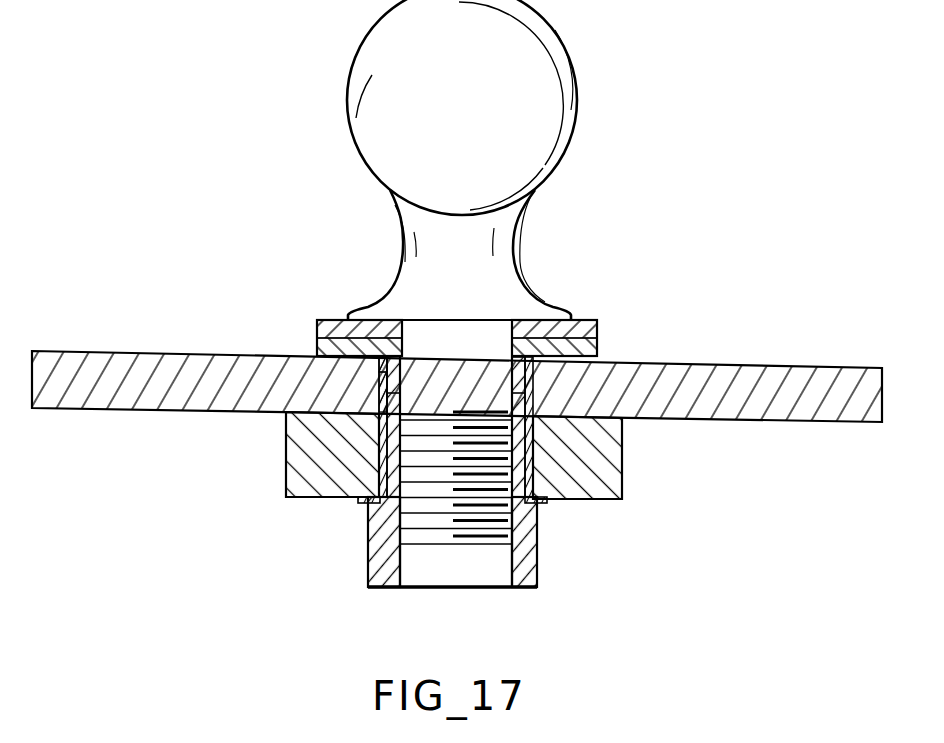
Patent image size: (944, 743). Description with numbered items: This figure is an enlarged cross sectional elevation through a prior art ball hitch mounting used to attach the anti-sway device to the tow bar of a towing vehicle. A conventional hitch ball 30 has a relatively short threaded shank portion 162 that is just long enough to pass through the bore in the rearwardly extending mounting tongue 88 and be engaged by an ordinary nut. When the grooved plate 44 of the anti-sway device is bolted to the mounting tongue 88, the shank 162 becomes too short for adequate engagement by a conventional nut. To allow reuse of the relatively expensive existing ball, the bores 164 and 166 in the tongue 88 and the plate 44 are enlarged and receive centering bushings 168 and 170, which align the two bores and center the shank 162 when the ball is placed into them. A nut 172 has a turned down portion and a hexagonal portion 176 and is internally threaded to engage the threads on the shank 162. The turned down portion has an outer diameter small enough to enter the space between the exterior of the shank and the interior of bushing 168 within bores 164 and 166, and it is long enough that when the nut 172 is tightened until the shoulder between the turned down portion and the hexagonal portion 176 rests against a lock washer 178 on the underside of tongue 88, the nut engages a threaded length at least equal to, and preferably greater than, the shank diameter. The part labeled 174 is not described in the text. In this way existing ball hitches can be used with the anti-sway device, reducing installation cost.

The hitch ball 30 is at (548, 42).
The grooved plate 44 is at (108, 367).
The mounting tongue 88 is at (293, 470).
The threaded shank portion 162 is at (413, 521).
The bore 164 is at (380, 446).
The bore 166 is at (385, 368).
The centering bushing 168 is at (400, 397).
The centering bushing 170 is at (520, 378).
The nut 172 is at (365, 587).
The right support block 174 is at (534, 452).
The hexagonal portion 176 is at (539, 571).
The lock washer 178 is at (362, 501).